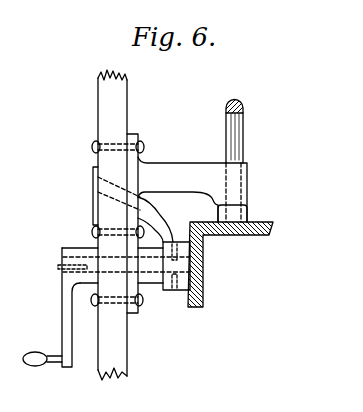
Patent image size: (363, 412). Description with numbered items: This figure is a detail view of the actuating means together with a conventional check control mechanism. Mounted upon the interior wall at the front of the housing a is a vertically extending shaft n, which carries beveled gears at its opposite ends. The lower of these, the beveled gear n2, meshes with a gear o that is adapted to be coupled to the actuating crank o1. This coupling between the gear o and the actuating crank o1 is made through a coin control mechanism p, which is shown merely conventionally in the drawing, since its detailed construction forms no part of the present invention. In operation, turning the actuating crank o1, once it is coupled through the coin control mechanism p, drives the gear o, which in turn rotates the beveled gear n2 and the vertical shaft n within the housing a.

The housing a is at (98, 105).
The vertically extending shaft n is at (243, 123).
The beveled gear n2 is at (263, 218).
The gear o is at (205, 267).
The actuating crank o1 is at (63, 323).
The coin control mechanism p is at (120, 195).